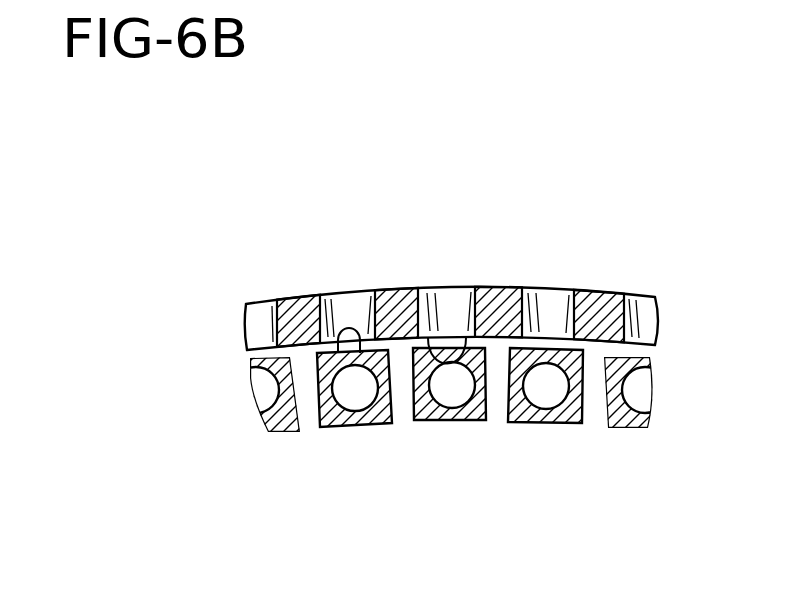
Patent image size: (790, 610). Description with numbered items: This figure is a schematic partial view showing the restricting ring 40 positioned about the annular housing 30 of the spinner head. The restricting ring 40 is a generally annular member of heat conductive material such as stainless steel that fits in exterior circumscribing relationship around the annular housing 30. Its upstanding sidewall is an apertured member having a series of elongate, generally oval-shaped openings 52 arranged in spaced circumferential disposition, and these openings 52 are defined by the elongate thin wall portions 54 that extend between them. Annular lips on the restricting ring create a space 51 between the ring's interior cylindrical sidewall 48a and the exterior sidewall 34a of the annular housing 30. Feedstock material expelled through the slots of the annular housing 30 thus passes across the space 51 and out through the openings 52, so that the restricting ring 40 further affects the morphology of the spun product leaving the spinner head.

The annular housing 30 is at (575, 423).
The exterior sidewall 34a is at (341, 338).
The restricting ring 40 is at (562, 292).
The interior cylindrical sidewall 48a is at (462, 348).
The space 51 is at (430, 347).
The openings 52 is at (348, 308).
The thin wall portions 54 is at (503, 310).